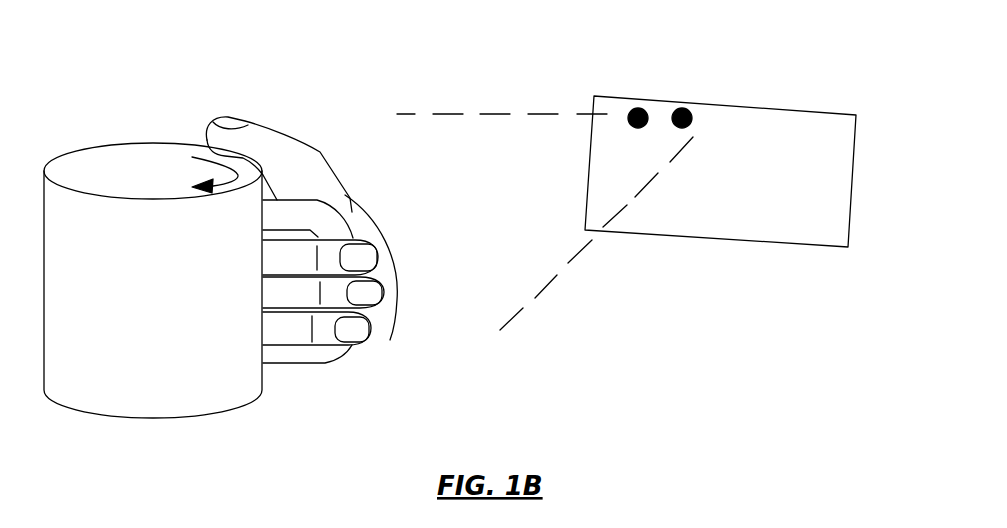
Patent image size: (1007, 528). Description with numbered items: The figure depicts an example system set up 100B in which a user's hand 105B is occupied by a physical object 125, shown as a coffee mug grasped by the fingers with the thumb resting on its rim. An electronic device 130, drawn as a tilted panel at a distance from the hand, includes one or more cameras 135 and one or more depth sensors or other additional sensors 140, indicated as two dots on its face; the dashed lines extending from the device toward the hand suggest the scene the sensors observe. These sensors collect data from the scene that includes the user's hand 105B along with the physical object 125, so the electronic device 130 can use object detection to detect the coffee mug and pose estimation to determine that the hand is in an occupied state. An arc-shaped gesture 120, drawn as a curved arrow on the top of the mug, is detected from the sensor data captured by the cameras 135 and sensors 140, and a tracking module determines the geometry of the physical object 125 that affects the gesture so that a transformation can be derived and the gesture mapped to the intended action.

The system set up 100B is at (787, 63).
The user's hand 105B is at (283, 138).
The gesture 120 is at (208, 162).
The physical object 125 is at (112, 357).
The electronic device 130 is at (852, 182).
The cameras 135 is at (646, 112).
The depth sensors or other additional sensors 140 is at (692, 113).